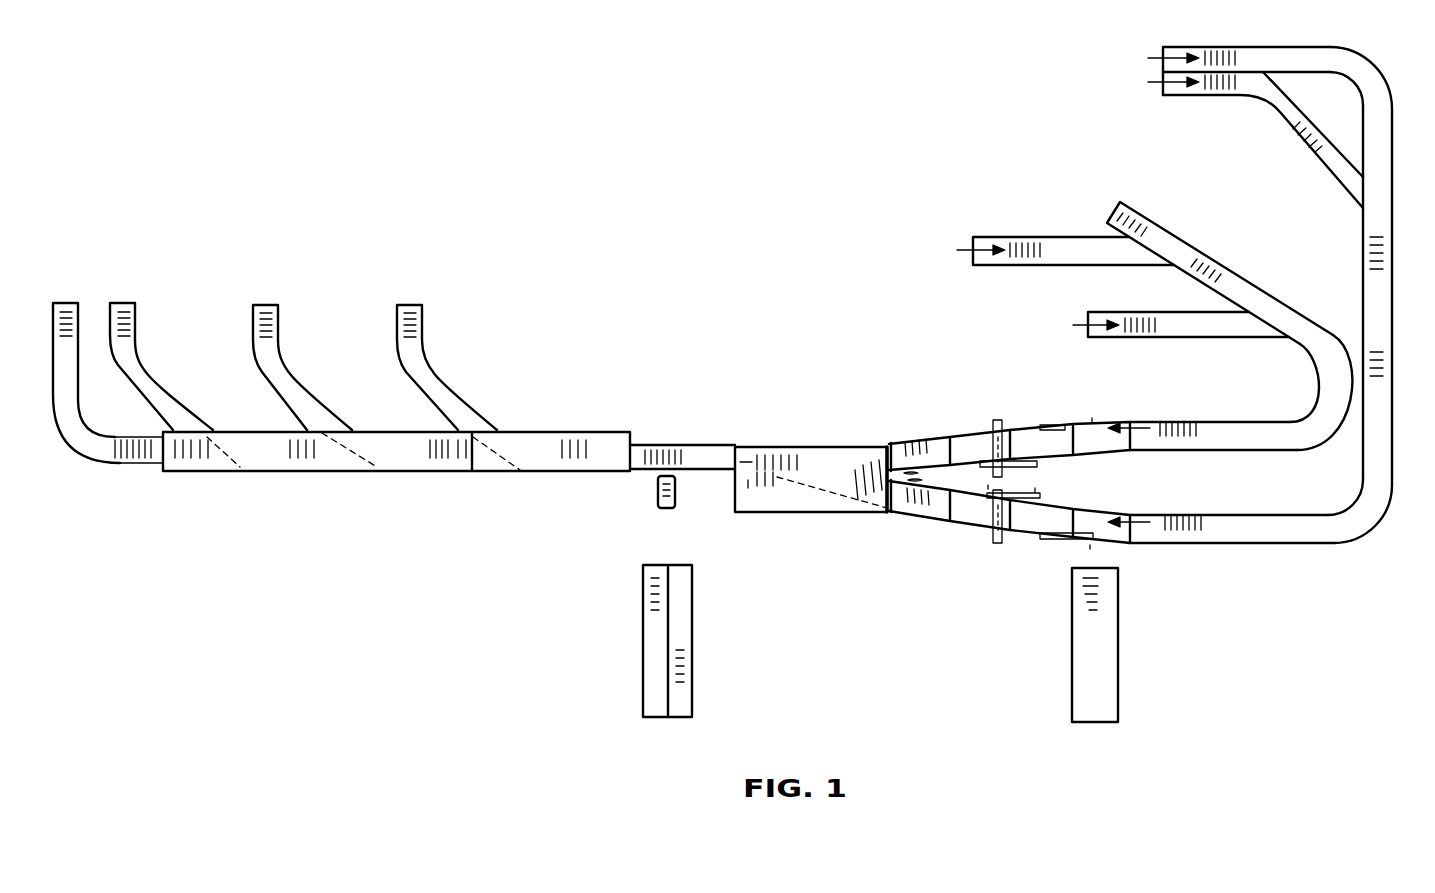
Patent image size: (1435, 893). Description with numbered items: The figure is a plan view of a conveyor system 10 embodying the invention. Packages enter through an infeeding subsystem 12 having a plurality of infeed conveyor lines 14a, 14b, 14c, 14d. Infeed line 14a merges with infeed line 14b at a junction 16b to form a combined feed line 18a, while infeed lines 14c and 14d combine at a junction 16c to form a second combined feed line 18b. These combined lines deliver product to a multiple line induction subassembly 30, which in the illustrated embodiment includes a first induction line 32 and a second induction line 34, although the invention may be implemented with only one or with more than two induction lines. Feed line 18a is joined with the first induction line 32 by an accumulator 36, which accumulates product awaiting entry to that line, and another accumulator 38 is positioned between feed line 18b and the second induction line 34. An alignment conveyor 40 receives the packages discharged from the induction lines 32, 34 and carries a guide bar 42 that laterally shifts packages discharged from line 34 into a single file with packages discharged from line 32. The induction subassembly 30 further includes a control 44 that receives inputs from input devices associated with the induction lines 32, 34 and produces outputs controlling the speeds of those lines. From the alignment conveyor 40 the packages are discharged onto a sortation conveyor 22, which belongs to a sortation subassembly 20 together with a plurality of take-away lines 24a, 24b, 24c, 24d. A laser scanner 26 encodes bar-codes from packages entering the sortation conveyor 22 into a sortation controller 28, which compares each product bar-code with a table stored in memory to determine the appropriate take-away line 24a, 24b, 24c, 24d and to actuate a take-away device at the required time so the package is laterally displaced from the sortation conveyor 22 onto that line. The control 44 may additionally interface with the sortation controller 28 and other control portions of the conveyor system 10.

The conveyor system 10 is at (700, 254).
The infeeding subsystem 12 is at (1283, 224).
The infeed conveyor line 14a is at (997, 237).
The infeed conveyor line 14b is at (1113, 312).
The infeed conveyor line 14c is at (1183, 95).
The infeed conveyor line 14d is at (1210, 47).
The junction 16b is at (1272, 300).
The junction 16c is at (1410, 212).
The combined feed line 18a is at (1297, 451).
The combined feed line 18b is at (1388, 483).
The sortation subassembly 20 is at (352, 294).
The sortation conveyor 22 is at (573, 432).
The take-away line 24a is at (418, 356).
The take-away line 24b is at (275, 356).
The take-away line 24c is at (137, 356).
The take-away line 24d is at (80, 455).
The laser scanner 26 is at (655, 490).
The sortation controller 28 is at (643, 604).
The multiple line induction subassembly 30 is at (1133, 495).
The first induction line 32 is at (912, 442).
The second induction line 34 is at (923, 518).
The accumulator 36 is at (1182, 422).
The accumulator 38 is at (1170, 507).
The alignment conveyor 40 is at (770, 447).
The guide bar 42 is at (793, 478).
The control 44 is at (1118, 660).